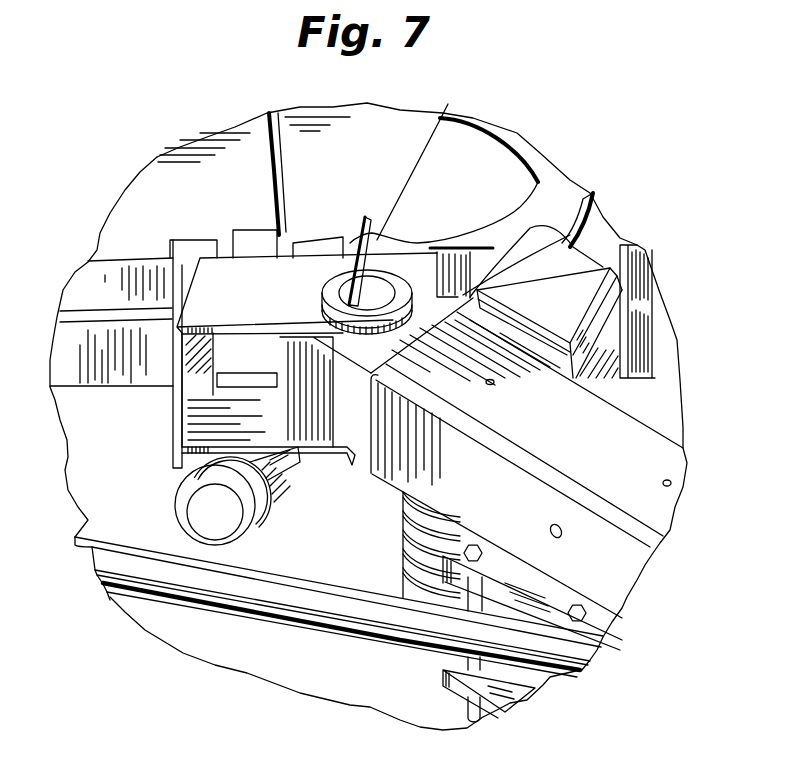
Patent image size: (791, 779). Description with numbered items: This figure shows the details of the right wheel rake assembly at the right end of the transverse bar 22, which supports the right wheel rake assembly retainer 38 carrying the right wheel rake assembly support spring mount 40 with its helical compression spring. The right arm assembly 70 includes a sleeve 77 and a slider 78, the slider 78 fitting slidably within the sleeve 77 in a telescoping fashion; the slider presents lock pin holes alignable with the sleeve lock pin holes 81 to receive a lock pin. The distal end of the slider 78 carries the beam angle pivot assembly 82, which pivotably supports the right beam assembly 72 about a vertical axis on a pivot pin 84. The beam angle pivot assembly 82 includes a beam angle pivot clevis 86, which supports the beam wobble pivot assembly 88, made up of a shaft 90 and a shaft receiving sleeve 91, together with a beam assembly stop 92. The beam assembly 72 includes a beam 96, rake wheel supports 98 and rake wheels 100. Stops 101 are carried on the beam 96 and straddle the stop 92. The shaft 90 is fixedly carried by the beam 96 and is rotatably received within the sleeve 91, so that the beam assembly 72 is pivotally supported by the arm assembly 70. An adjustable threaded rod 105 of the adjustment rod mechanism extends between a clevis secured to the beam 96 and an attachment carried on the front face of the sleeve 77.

The transverse bar 22 is at (540, 677).
The right wheel rake assembly retainer 38 is at (617, 258).
The right wheel rake assembly support spring mount 40 is at (390, 560).
The right arm assembly 70 is at (625, 410).
The right beam assembly 72 is at (108, 285).
The sleeve 77 is at (647, 465).
The slider 78 is at (570, 247).
The sleeve lock pin holes 81 is at (560, 535).
The beam angle pivot assembly 82 is at (464, 296).
The pivot pin 84 is at (404, 275).
The beam angle pivot clevis 86 is at (192, 304).
The beam wobble pivot assembly 88 is at (168, 478).
The shaft 90 is at (198, 537).
The shaft receiving sleeve 91 is at (275, 512).
The beam assembly stop 92 is at (250, 240).
The beam 96 is at (647, 283).
The rake wheel supports 98 is at (590, 205).
The rake wheels 100 is at (281, 160).
The stops 101 is at (172, 256).
The adjustable threaded rod 105 is at (387, 615).